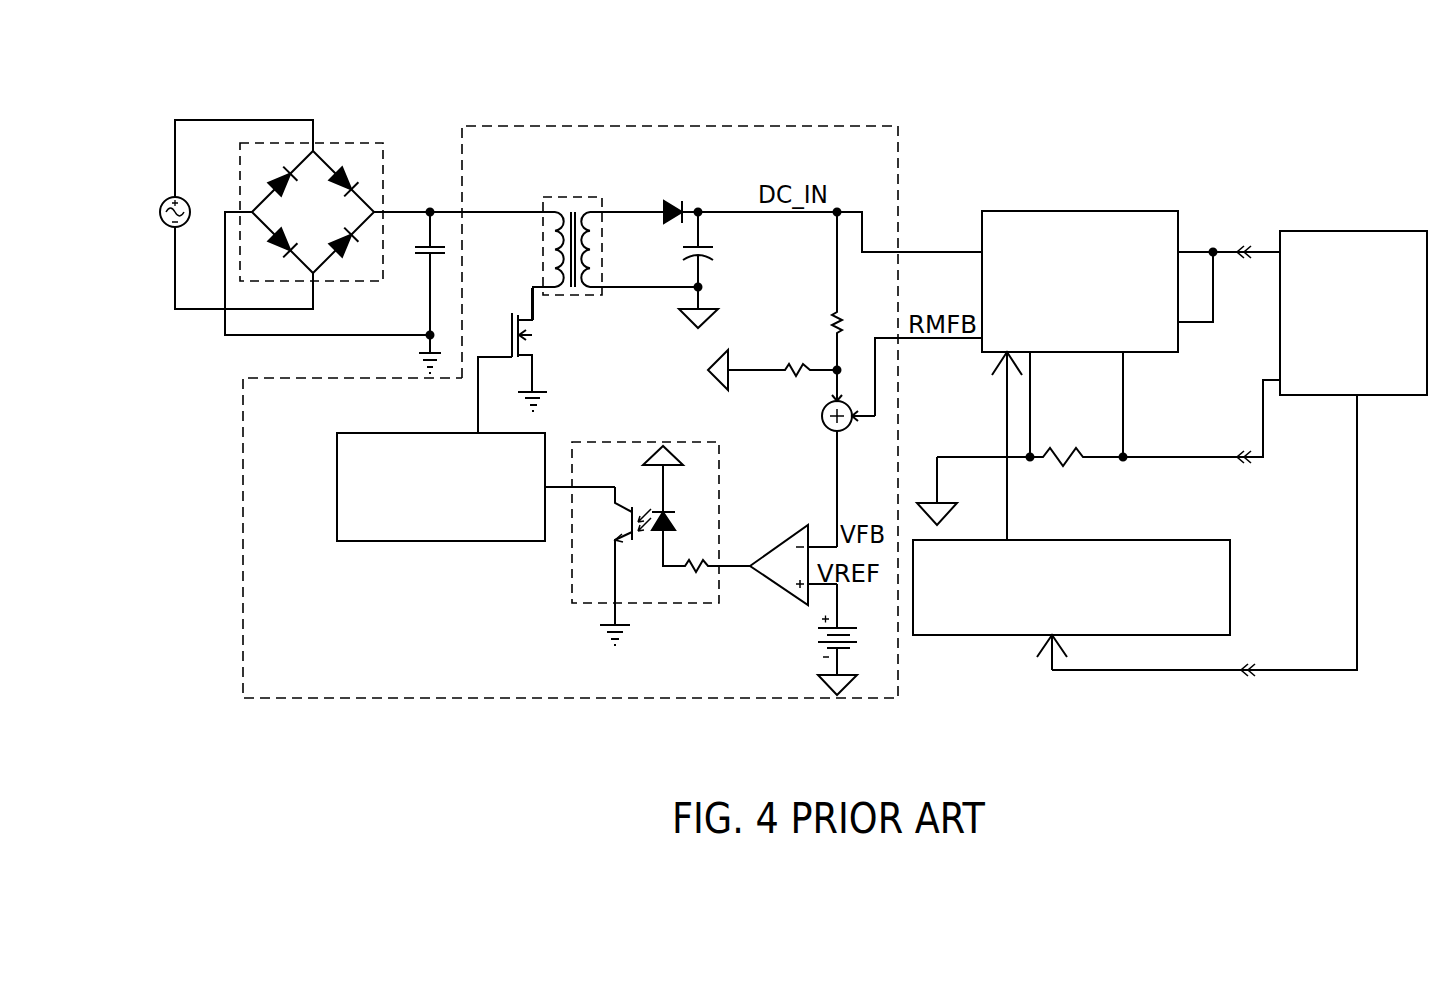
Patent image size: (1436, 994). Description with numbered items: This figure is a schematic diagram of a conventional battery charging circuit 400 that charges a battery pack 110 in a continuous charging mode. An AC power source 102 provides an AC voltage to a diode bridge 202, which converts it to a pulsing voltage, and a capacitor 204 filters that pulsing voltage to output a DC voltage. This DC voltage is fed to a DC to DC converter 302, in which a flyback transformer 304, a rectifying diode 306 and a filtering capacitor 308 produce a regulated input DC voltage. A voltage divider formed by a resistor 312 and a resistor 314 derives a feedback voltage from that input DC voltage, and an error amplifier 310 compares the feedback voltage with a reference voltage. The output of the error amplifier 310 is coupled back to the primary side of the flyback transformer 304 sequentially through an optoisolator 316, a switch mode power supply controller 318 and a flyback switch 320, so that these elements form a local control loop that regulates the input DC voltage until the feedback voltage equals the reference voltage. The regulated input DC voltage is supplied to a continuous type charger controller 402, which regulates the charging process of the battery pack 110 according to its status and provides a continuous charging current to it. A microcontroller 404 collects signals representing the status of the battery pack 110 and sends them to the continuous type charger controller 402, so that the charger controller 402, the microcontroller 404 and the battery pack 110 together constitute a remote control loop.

The battery charging circuit 400 is at (227, 97).
The AC power source 102 is at (165, 200).
The diode bridge 202 is at (356, 143).
The capacitor 204 is at (424, 257).
The DC to DC converter 302 is at (819, 126).
The flyback transformer 304 is at (558, 197).
The rectifying diode 306 is at (667, 200).
The filtering capacitor 308 is at (712, 247).
The error amplifier 310 is at (797, 533).
The resistor 312 is at (802, 363).
The resistor 314 is at (832, 313).
The optoisolator 316 is at (685, 603).
The switch mode power supply (SMPS) controller 318 is at (477, 542).
The flyback switch 320 is at (533, 340).
The continuous type charger controller 402 is at (992, 211).
The microcontroller 404 is at (1139, 540).
The battery pack 110 is at (1345, 231).